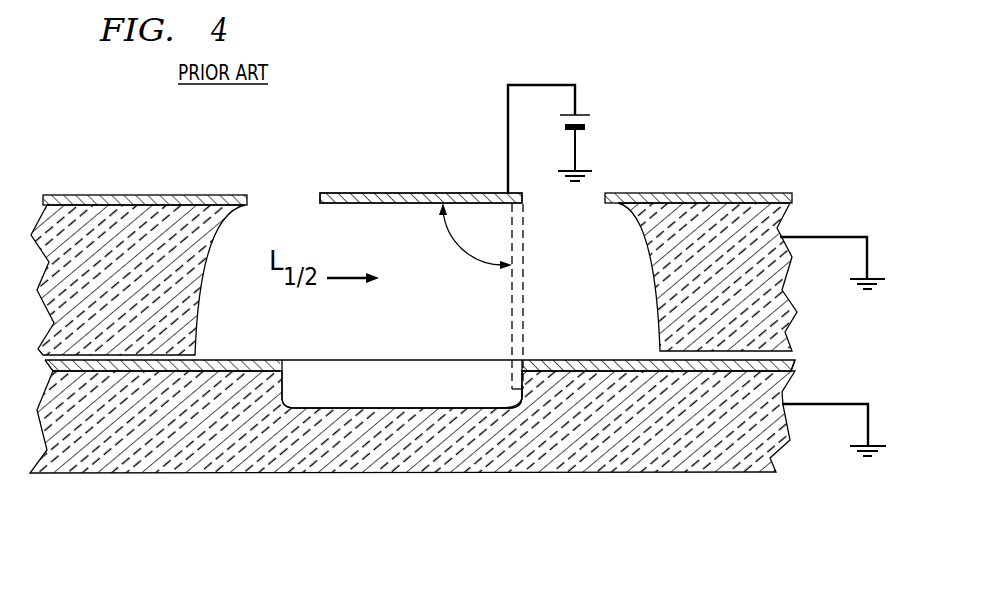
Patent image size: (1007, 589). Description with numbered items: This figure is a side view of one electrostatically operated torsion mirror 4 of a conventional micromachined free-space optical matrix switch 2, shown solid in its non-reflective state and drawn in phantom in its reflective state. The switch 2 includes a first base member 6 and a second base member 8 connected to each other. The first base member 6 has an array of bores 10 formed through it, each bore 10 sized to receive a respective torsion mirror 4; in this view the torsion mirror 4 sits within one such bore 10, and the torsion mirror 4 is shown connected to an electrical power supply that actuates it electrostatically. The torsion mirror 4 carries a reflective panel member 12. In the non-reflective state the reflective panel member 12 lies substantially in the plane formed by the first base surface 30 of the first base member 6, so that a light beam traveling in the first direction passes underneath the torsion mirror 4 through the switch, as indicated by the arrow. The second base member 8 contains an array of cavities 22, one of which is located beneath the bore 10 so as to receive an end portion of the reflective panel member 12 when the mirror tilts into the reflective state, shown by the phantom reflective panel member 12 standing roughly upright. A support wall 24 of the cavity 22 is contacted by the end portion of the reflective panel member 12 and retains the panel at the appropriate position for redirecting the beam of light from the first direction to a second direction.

The optical matrix switch 2 is at (440, 178).
The torsion mirror 4 is at (373, 193).
The first base member 6 is at (717, 223).
The second base member 8 is at (697, 453).
The bore 10 is at (268, 322).
The reflective panel member 12 is at (393, 207).
The cavity 22 is at (340, 380).
The support wall 24 is at (517, 403).
The first base surface 30 is at (118, 195).